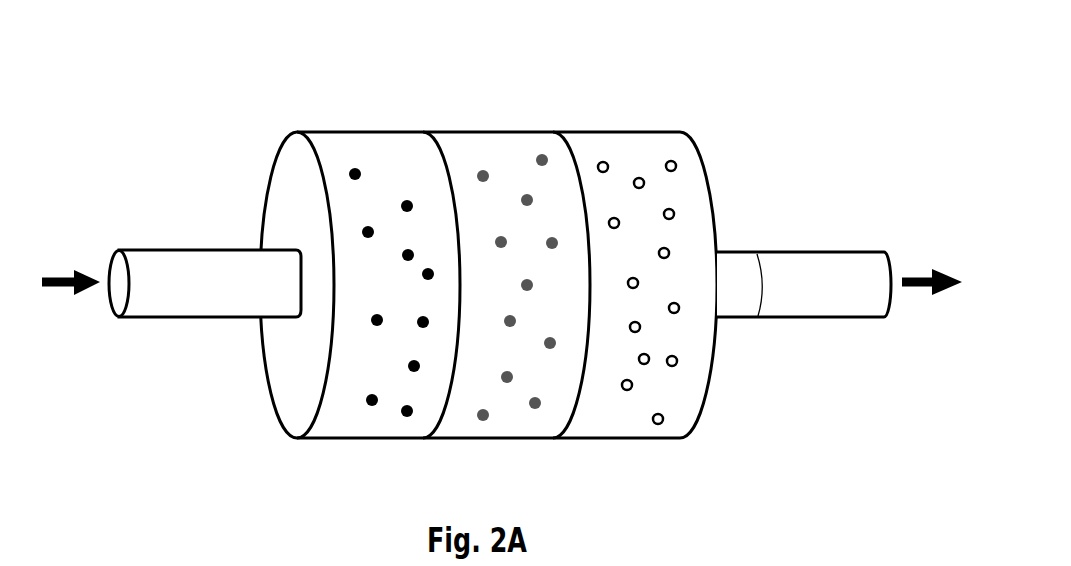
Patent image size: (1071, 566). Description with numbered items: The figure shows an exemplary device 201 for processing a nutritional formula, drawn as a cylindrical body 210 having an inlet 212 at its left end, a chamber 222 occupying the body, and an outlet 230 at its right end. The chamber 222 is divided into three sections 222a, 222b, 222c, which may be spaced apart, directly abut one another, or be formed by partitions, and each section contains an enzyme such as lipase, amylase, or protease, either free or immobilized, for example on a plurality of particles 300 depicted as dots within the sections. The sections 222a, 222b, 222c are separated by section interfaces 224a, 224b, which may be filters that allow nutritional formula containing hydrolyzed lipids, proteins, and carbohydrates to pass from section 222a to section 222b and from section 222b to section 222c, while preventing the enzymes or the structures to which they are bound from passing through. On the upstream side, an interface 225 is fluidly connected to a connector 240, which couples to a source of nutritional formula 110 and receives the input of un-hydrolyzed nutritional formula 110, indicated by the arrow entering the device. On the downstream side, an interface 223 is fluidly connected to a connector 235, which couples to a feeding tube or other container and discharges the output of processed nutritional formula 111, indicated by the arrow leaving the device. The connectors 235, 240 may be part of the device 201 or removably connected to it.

The nutritional formula 110 is at (72, 280).
The processed nutritional formula 111 is at (913, 273).
The device 201 is at (700, 63).
The body 210 is at (350, 81).
The inlet 212 is at (110, 297).
The chamber 222 is at (541, 278).
The first section 222a is at (352, 425).
The second section 222b is at (456, 426).
The third section 222c is at (686, 300).
The interface 223 is at (735, 300).
The section interface 224a is at (442, 163).
The section interface 224b is at (575, 162).
The interface 225 is at (265, 252).
The outlet 230 is at (890, 305).
The connector 235 is at (829, 298).
The connector 240 is at (179, 264).
The particles 300 is at (676, 165).